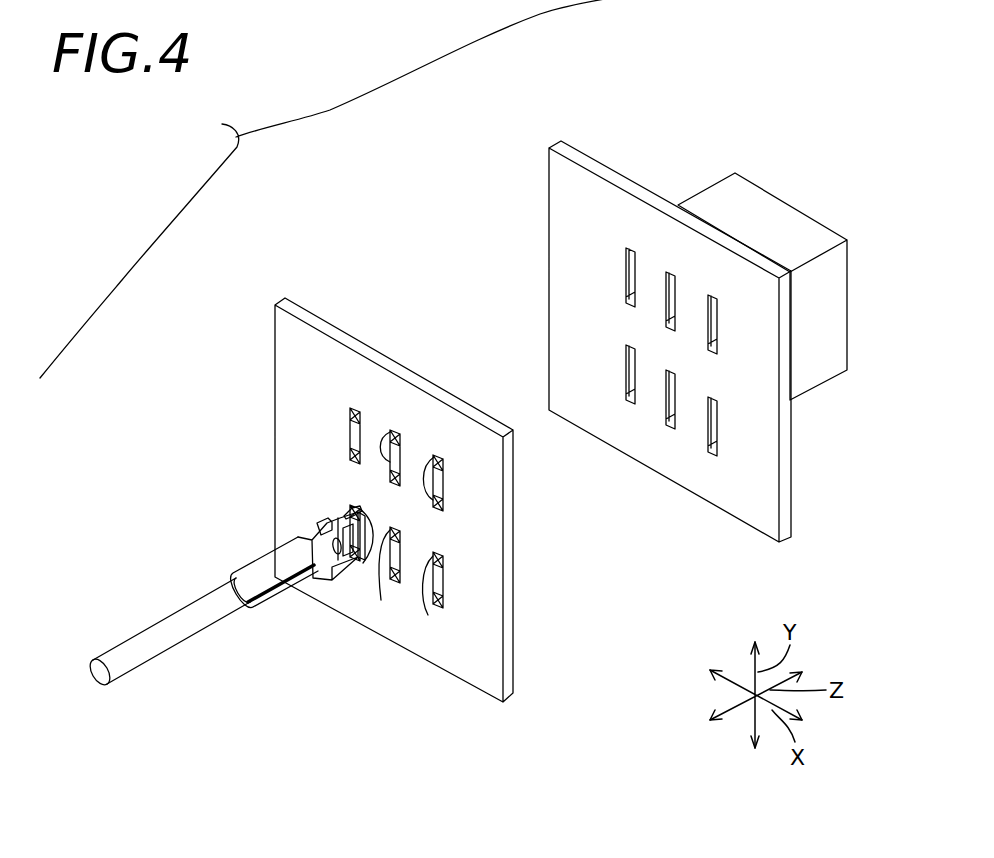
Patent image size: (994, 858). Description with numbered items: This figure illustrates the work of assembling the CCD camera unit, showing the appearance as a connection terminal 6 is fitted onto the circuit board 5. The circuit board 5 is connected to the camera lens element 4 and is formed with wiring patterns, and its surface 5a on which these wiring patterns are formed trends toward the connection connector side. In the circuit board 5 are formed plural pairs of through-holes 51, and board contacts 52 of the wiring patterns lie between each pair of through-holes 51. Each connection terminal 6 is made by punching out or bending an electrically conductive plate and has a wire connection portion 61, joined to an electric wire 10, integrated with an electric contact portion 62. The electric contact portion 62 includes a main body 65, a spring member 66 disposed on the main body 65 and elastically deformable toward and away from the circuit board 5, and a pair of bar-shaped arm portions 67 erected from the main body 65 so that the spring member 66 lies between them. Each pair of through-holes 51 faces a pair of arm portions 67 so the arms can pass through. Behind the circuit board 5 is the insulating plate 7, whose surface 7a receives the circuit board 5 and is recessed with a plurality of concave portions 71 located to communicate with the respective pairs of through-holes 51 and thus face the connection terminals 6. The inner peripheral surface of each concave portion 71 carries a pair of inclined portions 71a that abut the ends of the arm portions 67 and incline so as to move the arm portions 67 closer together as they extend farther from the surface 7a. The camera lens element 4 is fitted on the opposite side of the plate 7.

The camera lens element 4 is at (723, 197).
The circuit board 5 is at (306, 343).
The surface 5a is at (478, 640).
The connection terminal 6 is at (235, 522).
The insulating plate 7 is at (588, 148).
The surface 7a is at (735, 483).
The electric wire 10 is at (134, 647).
The through-hole 51 is at (350, 408).
The board contact 52 is at (350, 435).
The wire connection portion 61 is at (252, 565).
The electric contact portion 62 is at (254, 508).
The main body 65 is at (312, 540).
The spring member 66 is at (340, 518).
The arm portion 67 is at (350, 507).
The concave portion 71 is at (626, 250).
The inclined portion 71a is at (713, 445).